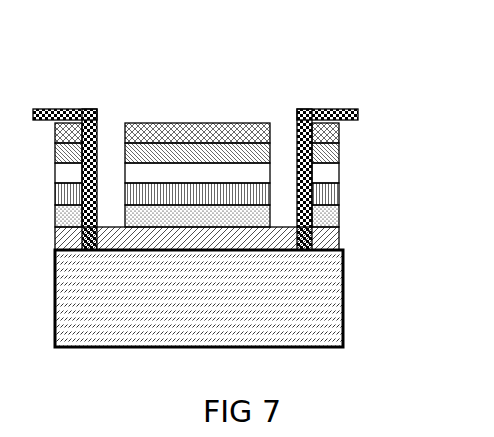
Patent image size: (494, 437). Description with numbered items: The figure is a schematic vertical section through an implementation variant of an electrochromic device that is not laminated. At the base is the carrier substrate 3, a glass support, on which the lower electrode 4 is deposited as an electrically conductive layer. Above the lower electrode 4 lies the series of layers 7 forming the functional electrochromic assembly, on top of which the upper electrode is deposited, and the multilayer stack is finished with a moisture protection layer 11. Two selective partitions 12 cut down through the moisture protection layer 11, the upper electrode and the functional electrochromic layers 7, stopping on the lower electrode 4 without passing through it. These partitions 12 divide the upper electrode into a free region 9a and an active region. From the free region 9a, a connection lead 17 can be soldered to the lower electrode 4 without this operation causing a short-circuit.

The carrier substrate 3 is at (147, 313).
The lower electrode 4 is at (325, 240).
The series of layers forming the functional electrochromic assembly 7 is at (345, 167).
The free region of the upper electrode 9a is at (327, 150).
The moisture protection layer 11 is at (230, 127).
The selective partition 12 is at (108, 172).
The connection lead 17 is at (70, 108).